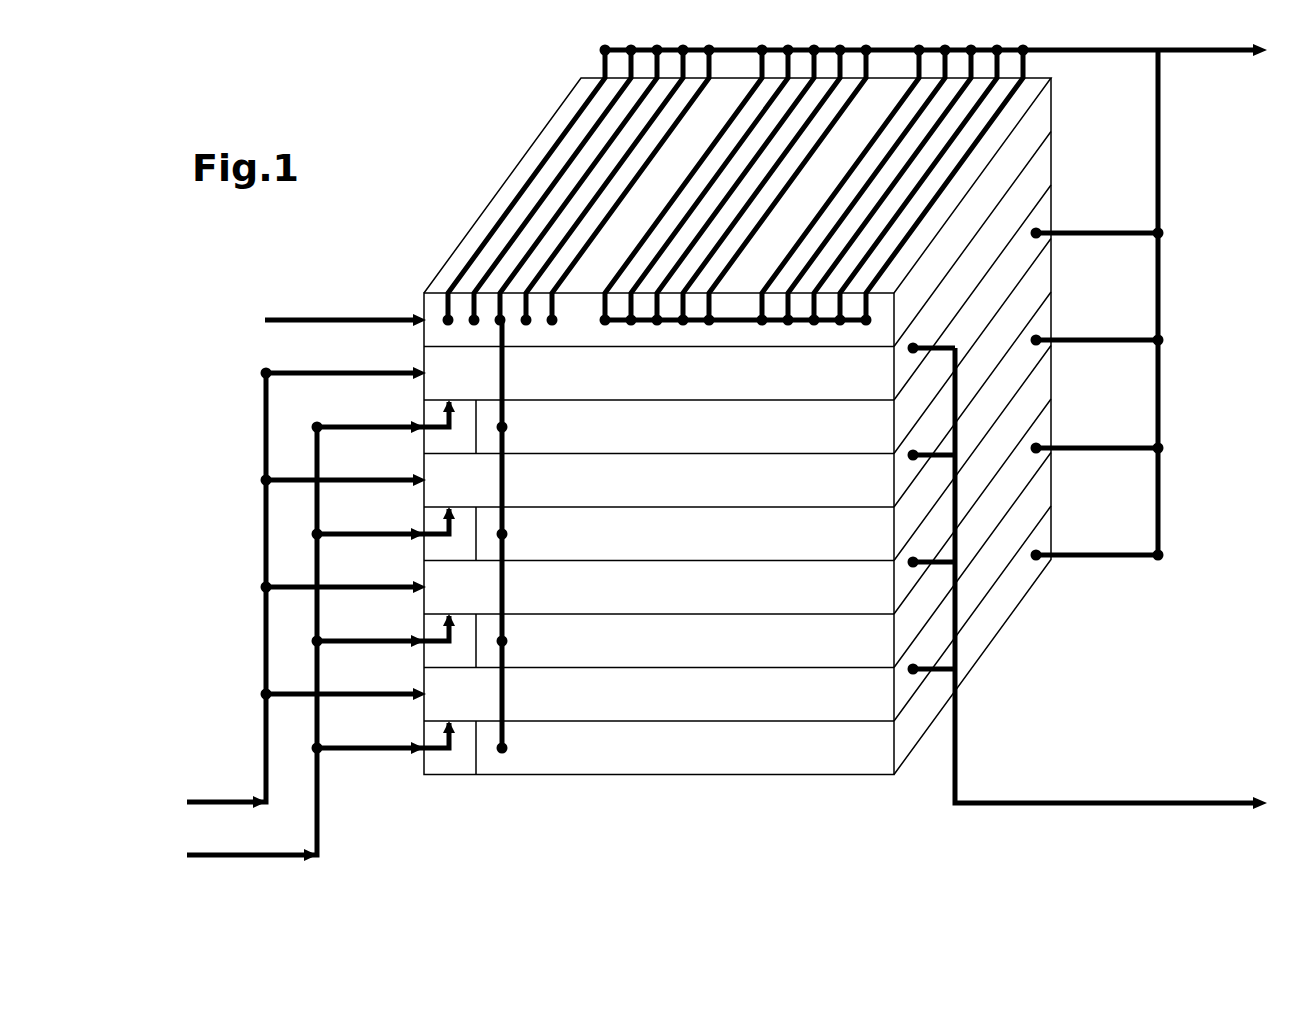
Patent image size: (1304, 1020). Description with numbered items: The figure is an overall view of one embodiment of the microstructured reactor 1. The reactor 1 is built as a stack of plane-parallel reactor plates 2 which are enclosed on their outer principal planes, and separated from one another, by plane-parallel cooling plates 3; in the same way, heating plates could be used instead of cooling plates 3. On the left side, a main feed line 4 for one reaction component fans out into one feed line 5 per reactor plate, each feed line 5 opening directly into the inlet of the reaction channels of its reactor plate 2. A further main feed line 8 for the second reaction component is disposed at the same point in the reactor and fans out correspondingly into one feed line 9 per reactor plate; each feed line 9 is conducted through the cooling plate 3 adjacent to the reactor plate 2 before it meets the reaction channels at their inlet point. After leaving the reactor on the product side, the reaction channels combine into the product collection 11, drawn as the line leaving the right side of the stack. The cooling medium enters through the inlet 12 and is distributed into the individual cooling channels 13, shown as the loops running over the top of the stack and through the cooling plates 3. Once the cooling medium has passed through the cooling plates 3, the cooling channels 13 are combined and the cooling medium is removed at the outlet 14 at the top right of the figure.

The reactor 1 is at (988, 832).
The reactor plates 2 is at (870, 386).
The cooling plates 3 is at (579, 333).
The main feed line 4 is at (266, 746).
The feed line 5 is at (359, 690).
The main feed line 8 is at (320, 812).
The feed line 9 is at (380, 637).
The product collection 11 is at (1140, 802).
The inlet 12 is at (420, 316).
The cooling channels 13 is at (535, 168).
The cooling medium removal 14 is at (1198, 52).